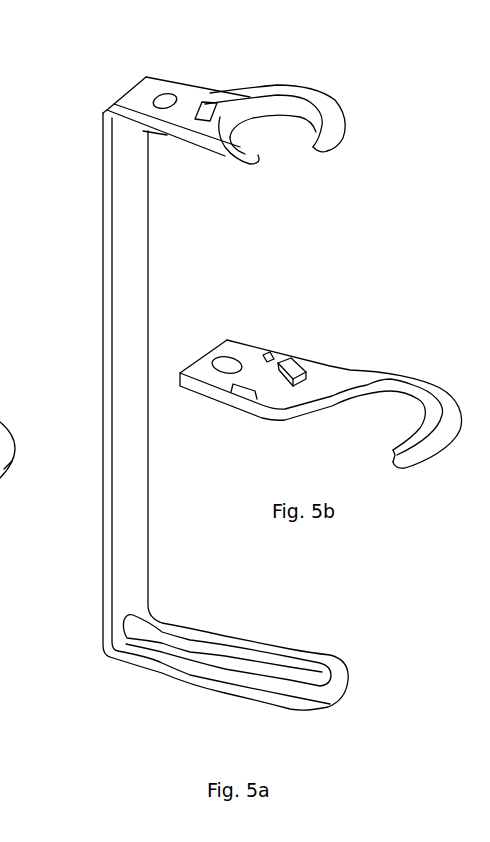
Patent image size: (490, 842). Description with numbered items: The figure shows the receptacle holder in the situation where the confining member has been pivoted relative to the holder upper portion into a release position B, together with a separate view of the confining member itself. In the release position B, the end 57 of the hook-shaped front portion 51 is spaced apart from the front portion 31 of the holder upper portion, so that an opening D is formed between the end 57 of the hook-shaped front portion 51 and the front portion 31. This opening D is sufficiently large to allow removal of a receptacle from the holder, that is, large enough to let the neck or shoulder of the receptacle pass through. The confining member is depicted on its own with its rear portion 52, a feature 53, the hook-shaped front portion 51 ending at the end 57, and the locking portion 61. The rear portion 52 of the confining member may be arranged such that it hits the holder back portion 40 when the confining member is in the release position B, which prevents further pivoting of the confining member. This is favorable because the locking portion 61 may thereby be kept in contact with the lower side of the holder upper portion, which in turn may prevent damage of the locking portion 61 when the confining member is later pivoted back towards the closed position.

In FIG. 5A, the holder back portion 40 is at (110, 292).
In FIG. 5A, the hook-shaped front portion 51 is at (304, 147).
In FIG. 5A, the end of the hook-shaped front portion 57 is at (333, 148).
In FIG. 5A, the front portion of the holder upper portion 31 is at (235, 160).
In FIG. 5A, the opening D is at (300, 167).
In FIG. 5A, the release position B is at (272, 39).
In FIG. 5B, the rear portion of the confining member 52 is at (321, 377).
In FIG. 5B, the tab 53 is at (283, 388).
In FIG. 5B, the locking portion 61 is at (270, 378).